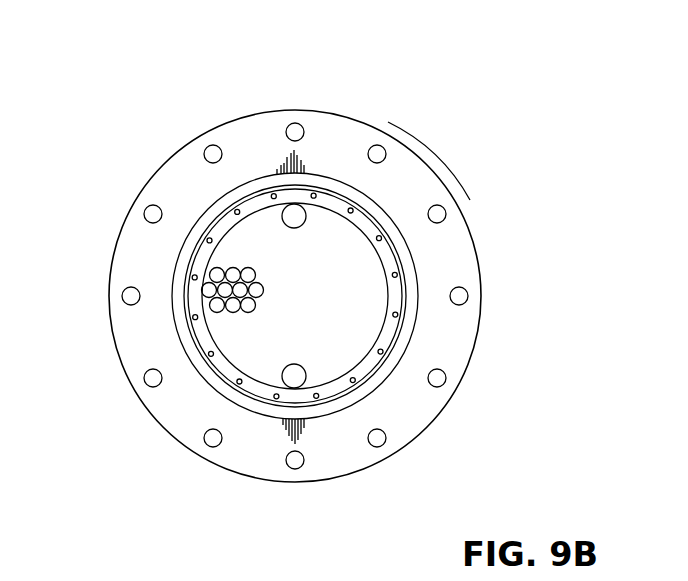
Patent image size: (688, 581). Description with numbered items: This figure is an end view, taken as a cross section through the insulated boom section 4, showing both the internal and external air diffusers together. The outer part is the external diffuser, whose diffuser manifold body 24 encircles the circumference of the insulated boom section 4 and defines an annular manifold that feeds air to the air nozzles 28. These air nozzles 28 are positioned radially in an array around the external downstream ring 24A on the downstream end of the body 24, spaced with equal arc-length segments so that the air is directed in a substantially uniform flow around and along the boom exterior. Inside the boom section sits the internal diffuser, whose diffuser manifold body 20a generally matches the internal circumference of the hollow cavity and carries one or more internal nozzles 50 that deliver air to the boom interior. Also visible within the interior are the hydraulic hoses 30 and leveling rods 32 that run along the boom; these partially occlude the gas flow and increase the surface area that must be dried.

The insulated boom section 4 is at (330, 160).
The diffuser manifold body 24 is at (418, 418).
The ring 24A is at (417, 167).
The air nozzles 28 is at (294, 122).
The leveling rods 32 is at (304, 372).
The hydraulic hoses 30 is at (195, 298).
The diffuser manifold body 20a is at (248, 392).
The internal nozzles 50 is at (277, 399).